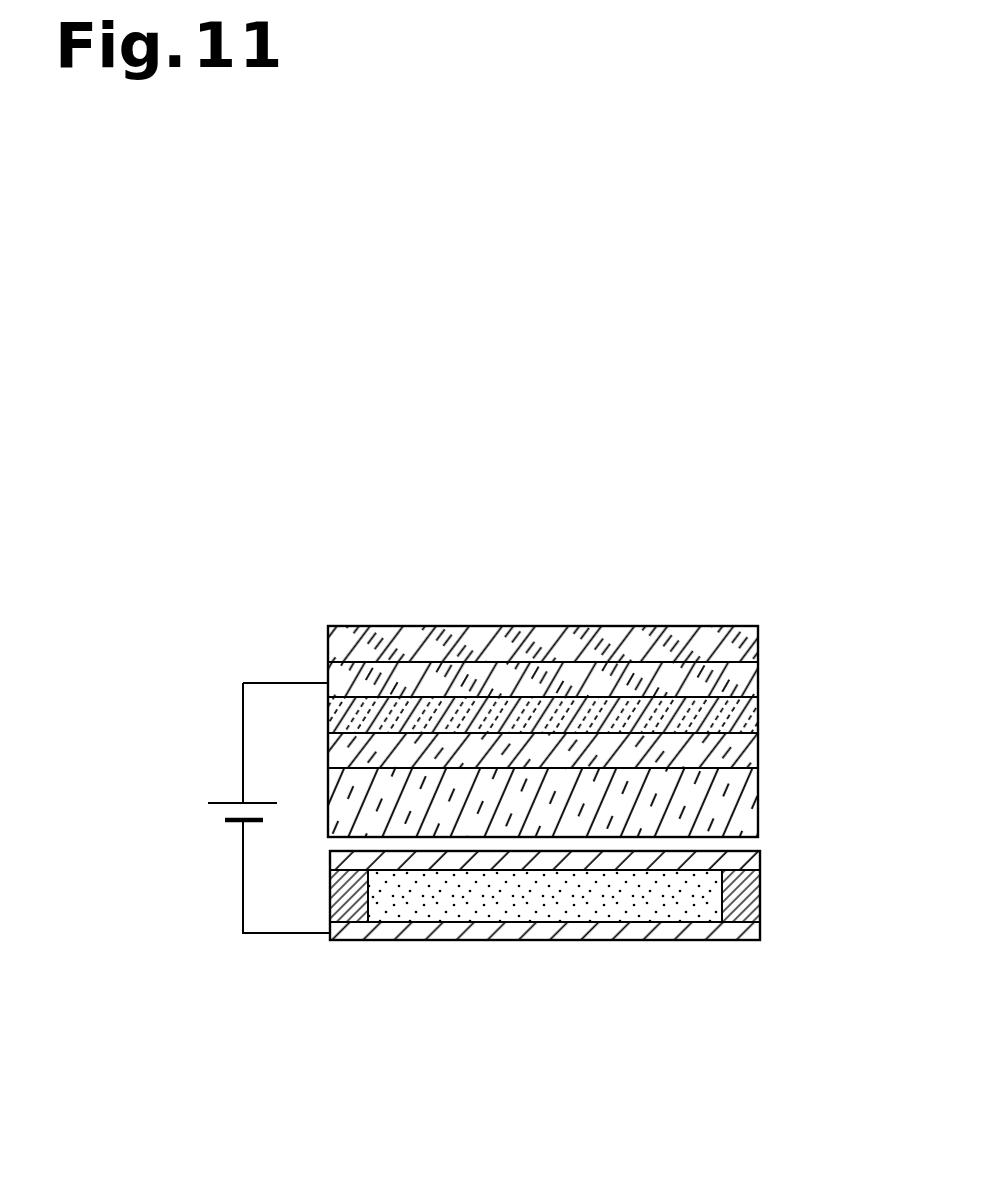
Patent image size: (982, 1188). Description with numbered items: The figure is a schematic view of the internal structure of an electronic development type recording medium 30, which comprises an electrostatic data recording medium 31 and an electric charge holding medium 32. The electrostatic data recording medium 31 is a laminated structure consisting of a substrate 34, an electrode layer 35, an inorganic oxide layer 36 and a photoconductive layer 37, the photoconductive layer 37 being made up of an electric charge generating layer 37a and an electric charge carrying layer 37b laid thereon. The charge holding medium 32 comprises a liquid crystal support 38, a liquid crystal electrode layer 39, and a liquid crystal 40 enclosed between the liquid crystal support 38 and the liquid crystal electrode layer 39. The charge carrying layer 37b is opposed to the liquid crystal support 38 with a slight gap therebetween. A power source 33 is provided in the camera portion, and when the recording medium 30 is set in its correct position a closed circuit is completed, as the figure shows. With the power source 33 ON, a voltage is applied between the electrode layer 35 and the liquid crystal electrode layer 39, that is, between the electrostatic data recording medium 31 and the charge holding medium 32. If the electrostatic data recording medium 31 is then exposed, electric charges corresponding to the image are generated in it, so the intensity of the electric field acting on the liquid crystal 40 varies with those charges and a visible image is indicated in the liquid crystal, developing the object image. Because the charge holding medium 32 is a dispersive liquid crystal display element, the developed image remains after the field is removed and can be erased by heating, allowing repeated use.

The electronic development type recording medium 30 is at (223, 962).
The electrostatic data recording medium 31 is at (568, 693).
The electric charge holding medium 32 is at (512, 970).
The power source 33 is at (237, 820).
The substrate 34 is at (695, 640).
The electrode layer 35 is at (512, 680).
The inorganic oxide layer 36 is at (752, 715).
The photoconductive layer 37 is at (609, 776).
The electric charge generating layer 37a is at (760, 735).
The electric charge carrying layer 37b is at (758, 825).
The liquid crystal support 38 is at (483, 863).
The liquid crystal electrode layer 39 is at (687, 930).
The liquid crystal 40 is at (588, 907).